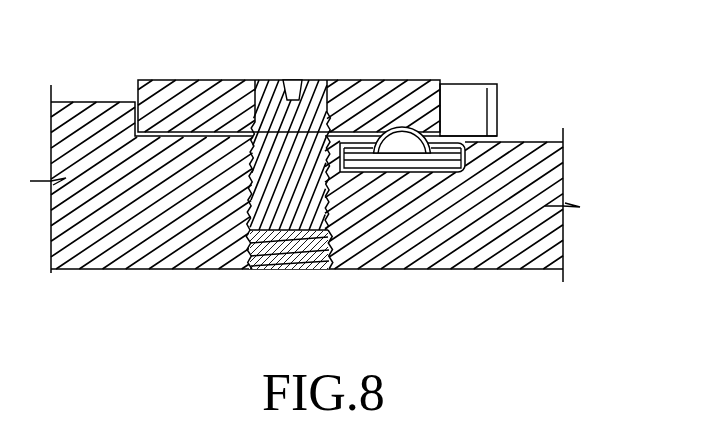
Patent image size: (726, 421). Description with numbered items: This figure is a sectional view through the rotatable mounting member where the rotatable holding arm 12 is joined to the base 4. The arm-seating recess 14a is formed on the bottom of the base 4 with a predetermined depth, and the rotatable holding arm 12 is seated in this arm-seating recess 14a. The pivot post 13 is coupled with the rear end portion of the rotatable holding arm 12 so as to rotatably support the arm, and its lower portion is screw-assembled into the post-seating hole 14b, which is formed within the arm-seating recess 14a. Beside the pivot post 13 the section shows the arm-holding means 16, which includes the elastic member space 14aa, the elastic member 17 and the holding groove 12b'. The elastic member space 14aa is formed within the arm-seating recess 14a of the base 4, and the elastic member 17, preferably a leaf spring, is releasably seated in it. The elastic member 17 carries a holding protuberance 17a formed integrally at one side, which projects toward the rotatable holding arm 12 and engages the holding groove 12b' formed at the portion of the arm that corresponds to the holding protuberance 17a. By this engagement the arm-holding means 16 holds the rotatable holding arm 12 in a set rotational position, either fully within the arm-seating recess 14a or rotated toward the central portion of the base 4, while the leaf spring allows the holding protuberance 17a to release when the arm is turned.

The base 4 is at (438, 253).
The rotatable holding arm 12 is at (185, 92).
The holding groove 12b' is at (416, 91).
The pivot post 13 is at (258, 87).
The arm-seating recess 14a is at (523, 137).
The elastic member space 14aa is at (495, 138).
The post-seating hole 14b is at (247, 237).
The arm-holding means 16 is at (443, 121).
The elastic member 17 is at (393, 175).
The holding protuberance 17a is at (388, 120).